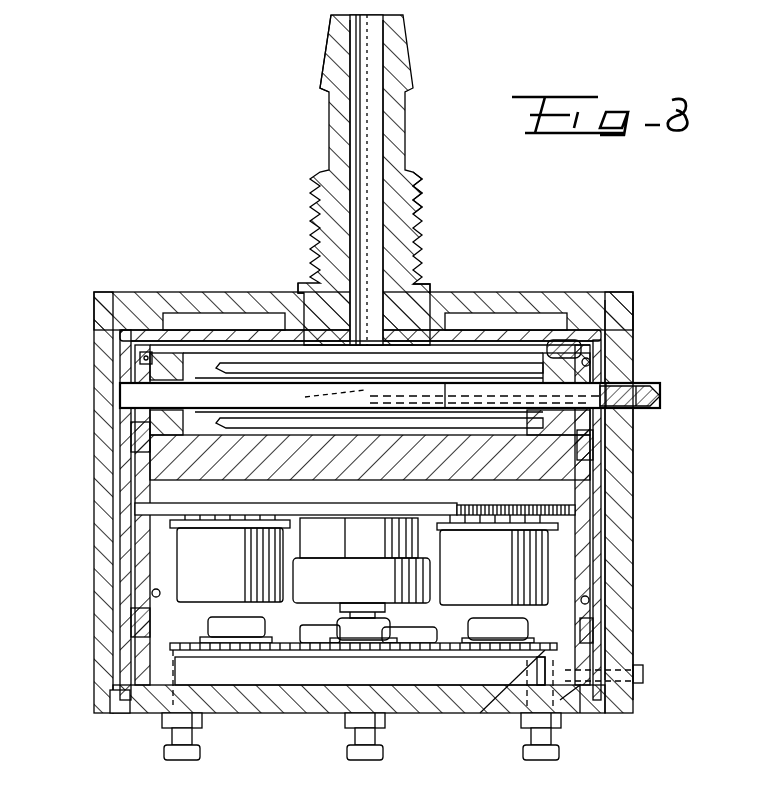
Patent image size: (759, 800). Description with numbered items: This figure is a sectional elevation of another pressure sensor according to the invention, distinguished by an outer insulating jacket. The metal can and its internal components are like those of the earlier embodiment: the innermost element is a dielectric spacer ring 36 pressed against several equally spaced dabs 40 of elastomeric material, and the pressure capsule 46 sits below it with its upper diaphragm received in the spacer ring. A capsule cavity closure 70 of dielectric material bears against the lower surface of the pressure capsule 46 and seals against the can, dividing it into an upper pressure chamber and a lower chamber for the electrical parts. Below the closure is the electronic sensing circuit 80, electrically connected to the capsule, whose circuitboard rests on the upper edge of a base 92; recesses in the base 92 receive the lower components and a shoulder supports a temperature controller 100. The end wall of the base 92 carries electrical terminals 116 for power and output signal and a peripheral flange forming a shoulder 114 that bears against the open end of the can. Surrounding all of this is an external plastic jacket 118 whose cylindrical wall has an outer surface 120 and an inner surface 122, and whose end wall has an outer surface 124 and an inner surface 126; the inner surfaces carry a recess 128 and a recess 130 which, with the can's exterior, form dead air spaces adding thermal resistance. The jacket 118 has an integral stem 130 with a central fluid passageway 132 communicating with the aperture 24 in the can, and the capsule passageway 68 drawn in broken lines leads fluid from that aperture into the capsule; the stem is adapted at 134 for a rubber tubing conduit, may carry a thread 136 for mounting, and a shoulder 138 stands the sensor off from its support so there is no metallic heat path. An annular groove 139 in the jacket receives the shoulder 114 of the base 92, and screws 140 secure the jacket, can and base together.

The aperture 24 is at (291, 292).
The spacer ring 36 is at (130, 377).
The dabs of elastomeric material 40 is at (548, 330).
The pressure capsule 46 is at (137, 393).
The conductor 68 is at (321, 398).
The capsule cavity closure 70 is at (125, 462).
The electronic sensing circuit 80 is at (585, 510).
The base 92 is at (130, 573).
The temperature controller 100 is at (472, 650).
The shoulder 114 is at (618, 688).
The electrical terminals 116 is at (345, 736).
The external plastic jacket 118 is at (636, 313).
The outer surface 120 is at (640, 318).
The inner surface 122 is at (583, 348).
The outer surface 124 is at (575, 330).
The inner surface 126 is at (590, 357).
The recess 128 is at (605, 470).
The stem 130 is at (332, 126).
The central fluid passageway 132 is at (372, 147).
The stem connection portion 134 is at (321, 85).
The thread 136 is at (425, 199).
The shoulder 138 is at (432, 285).
The annular groove 139 is at (600, 716).
The screws 140 is at (645, 673).